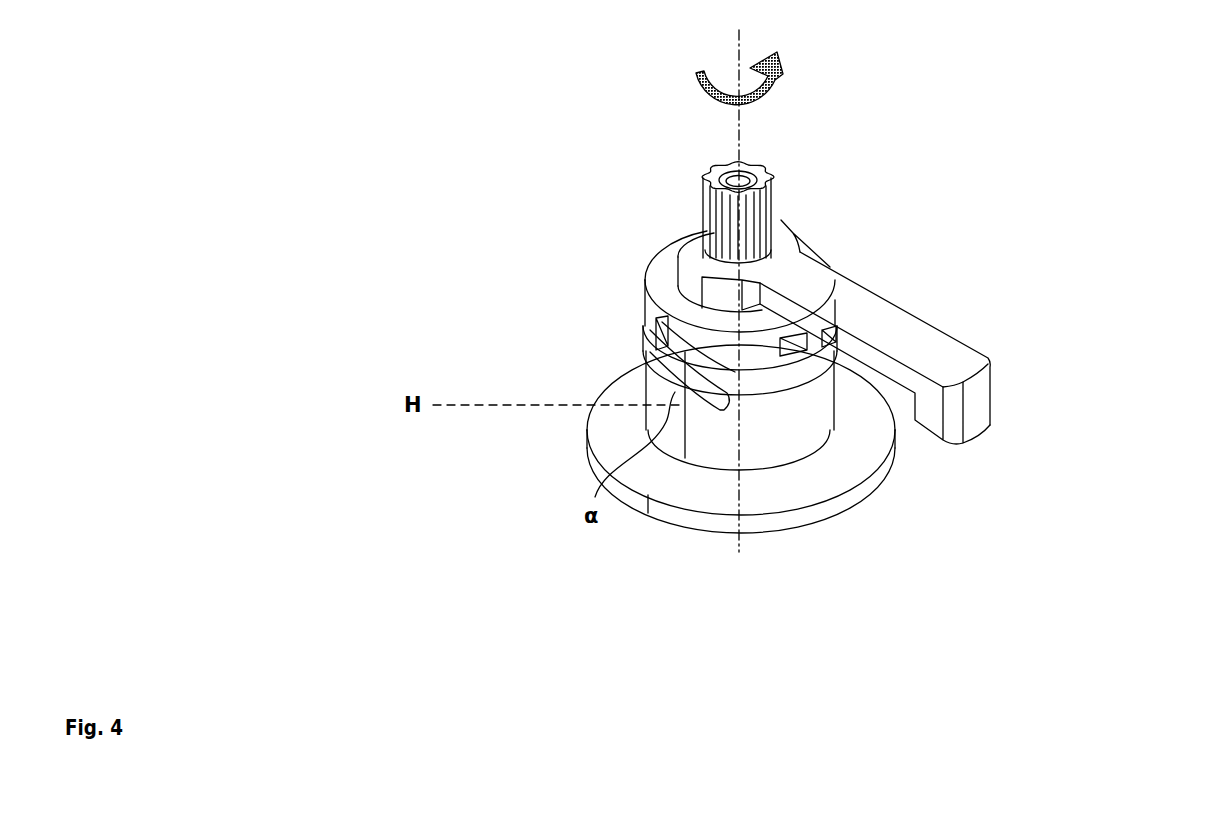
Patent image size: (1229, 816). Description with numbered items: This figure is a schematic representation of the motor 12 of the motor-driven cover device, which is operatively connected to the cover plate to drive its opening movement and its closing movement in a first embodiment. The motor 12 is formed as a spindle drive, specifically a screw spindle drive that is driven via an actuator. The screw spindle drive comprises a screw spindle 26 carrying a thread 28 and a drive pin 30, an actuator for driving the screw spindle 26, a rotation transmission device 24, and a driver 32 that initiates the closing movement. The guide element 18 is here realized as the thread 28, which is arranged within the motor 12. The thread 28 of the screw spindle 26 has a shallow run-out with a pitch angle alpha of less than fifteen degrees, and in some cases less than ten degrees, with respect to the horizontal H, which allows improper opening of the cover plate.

The motor 12 is at (1101, 551).
The guide element 18 is at (665, 366).
The rotation transmission device 24 is at (697, 522).
The screw spindle 26 is at (663, 268).
The thread 28 is at (673, 385).
The drive pin 30 is at (760, 183).
The driver 32 is at (940, 353).